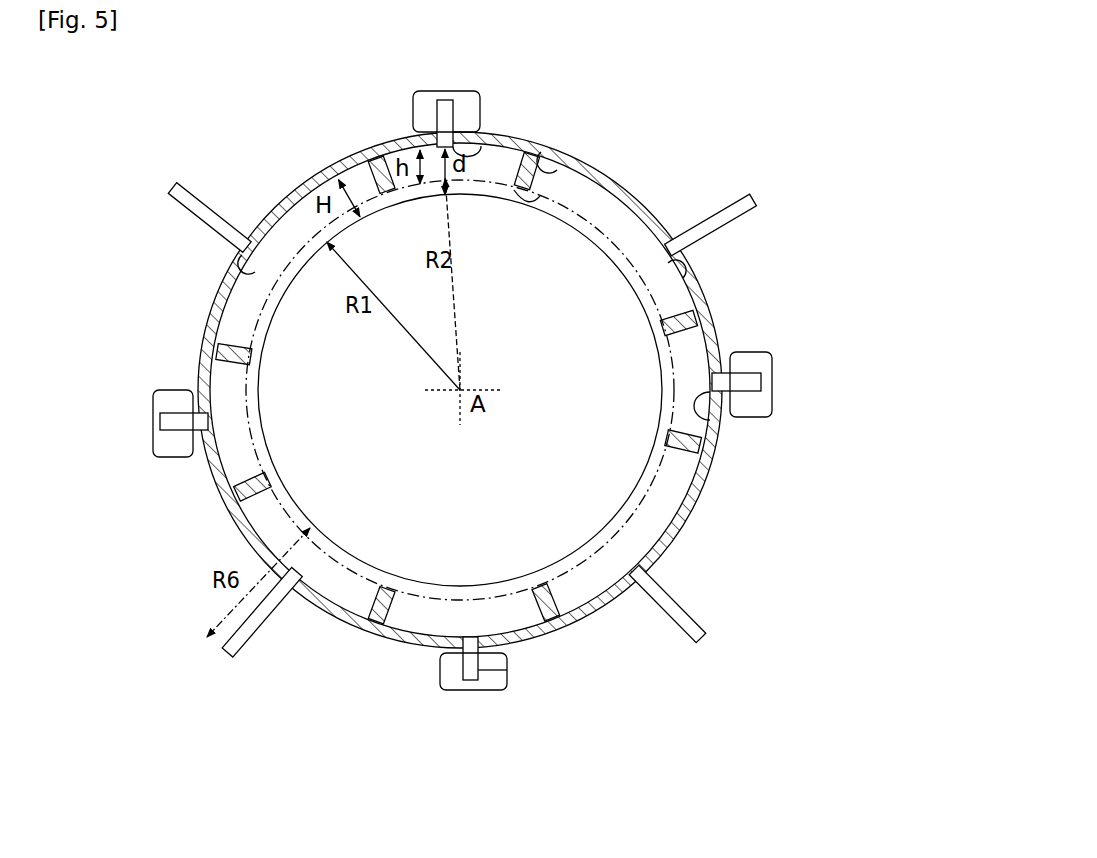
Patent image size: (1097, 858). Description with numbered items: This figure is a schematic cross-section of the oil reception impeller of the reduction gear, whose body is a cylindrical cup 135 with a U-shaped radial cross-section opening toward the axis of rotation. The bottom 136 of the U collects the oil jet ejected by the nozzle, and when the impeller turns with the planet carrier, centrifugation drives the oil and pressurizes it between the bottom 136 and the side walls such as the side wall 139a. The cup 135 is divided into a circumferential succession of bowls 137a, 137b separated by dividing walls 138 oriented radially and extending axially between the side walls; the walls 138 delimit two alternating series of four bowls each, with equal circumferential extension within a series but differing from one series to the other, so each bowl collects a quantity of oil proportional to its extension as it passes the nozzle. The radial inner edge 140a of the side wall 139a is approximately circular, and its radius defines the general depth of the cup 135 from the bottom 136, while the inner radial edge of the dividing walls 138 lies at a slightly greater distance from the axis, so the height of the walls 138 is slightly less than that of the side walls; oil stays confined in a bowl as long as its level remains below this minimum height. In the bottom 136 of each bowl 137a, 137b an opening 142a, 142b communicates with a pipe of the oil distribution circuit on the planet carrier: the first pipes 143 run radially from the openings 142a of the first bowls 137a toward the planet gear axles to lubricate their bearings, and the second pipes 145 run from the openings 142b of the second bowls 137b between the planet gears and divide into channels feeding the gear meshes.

The cylindrical cup 135 is at (768, 132).
The bottom 136 is at (628, 184).
The bowl of the first series 137a is at (262, 308).
The bowl of the second series 137b is at (262, 420).
The circumferential dividing wall 138 is at (372, 158).
The side wall 139a is at (577, 200).
The radial inner edge of side wall 140a is at (528, 214).
The opening of first bowl bottom 142a is at (244, 262).
The opening of second bowl bottom 142b is at (483, 136).
The first pipe 143 is at (172, 185).
The second pipe 145 is at (437, 117).